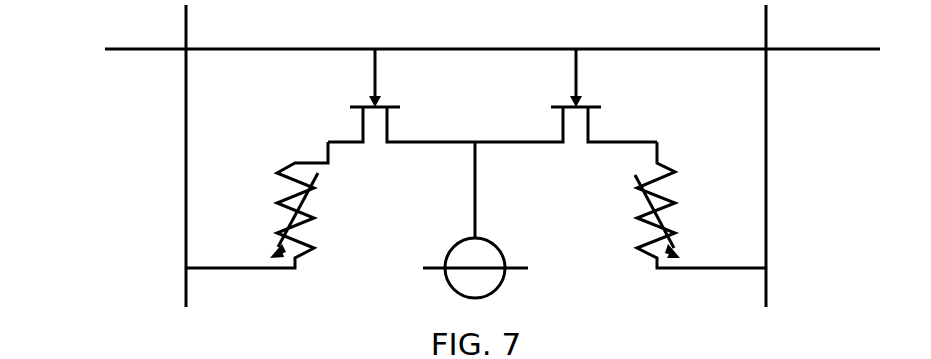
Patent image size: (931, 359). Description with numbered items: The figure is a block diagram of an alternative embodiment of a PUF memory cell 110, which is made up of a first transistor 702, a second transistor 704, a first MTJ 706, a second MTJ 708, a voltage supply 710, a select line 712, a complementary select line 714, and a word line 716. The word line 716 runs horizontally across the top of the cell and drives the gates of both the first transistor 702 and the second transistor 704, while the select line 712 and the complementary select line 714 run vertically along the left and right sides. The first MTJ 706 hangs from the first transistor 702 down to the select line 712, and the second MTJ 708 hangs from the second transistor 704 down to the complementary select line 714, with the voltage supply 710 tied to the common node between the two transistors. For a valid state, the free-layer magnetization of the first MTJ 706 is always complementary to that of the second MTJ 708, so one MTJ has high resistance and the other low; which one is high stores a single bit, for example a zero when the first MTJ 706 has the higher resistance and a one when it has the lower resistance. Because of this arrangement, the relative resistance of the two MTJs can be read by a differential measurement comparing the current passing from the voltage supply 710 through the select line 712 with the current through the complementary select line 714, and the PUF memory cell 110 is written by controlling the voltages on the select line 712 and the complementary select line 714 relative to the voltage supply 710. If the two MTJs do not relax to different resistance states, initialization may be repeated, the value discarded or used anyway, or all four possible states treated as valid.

The PUF memory cell 110 is at (66, 46).
The first transistor 702 is at (357, 104).
The second transistor 704 is at (593, 104).
The first MTJ 706 is at (313, 219).
The second MTJ 708 is at (637, 219).
The voltage supply 710 is at (467, 239).
The select line 712 is at (184, 32).
The complementary select line 714 is at (768, 30).
The word line 716 is at (243, 47).